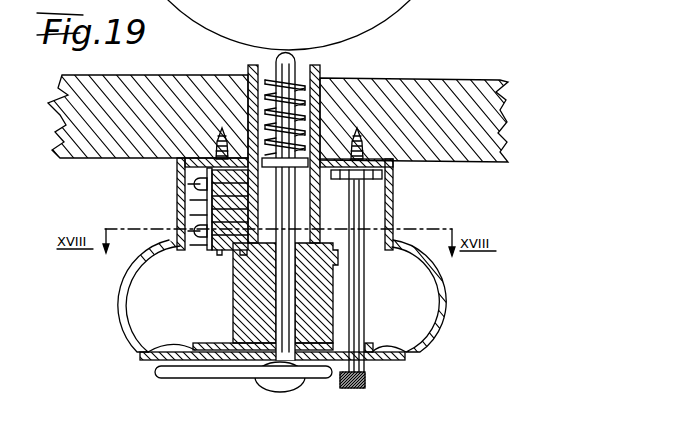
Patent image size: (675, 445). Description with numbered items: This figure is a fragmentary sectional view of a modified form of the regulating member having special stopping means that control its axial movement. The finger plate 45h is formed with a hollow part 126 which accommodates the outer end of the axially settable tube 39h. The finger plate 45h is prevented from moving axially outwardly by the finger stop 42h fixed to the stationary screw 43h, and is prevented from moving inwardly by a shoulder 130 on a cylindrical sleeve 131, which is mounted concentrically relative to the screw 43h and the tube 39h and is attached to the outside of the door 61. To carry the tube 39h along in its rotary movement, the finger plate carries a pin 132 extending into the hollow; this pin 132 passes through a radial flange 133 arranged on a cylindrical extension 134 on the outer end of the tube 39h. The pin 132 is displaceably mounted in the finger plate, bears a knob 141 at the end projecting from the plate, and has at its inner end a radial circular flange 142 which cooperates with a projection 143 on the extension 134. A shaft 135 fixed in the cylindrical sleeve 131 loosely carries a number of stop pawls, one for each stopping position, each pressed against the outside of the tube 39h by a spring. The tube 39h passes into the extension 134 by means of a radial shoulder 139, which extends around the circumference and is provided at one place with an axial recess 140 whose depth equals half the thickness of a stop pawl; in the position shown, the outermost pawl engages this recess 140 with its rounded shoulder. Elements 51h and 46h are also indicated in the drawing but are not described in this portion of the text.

The plunger rod 51h is at (302, 79).
The door 61 is at (430, 95).
The radial circular flange 142 is at (397, 174).
The axially settable tube 39h is at (362, 180).
The cylindrical sleeve 131 is at (395, 206).
The shoulder 130 is at (397, 233).
The radial shoulder 139 is at (326, 238).
The projection 143 is at (340, 258).
The pin 132 is at (365, 290).
The hollow part 126 is at (448, 289).
The shaft 135 is at (232, 259).
The axial recess 140 is at (225, 264).
The cylindrical extension 134 is at (238, 277).
The radial flange 133 is at (208, 343).
The finger stop 42h is at (238, 378).
The stationary screw 43h is at (283, 368).
The knob 141 is at (353, 388).
The finger plate 45h is at (368, 362).
The shell bottom 46h is at (400, 362).